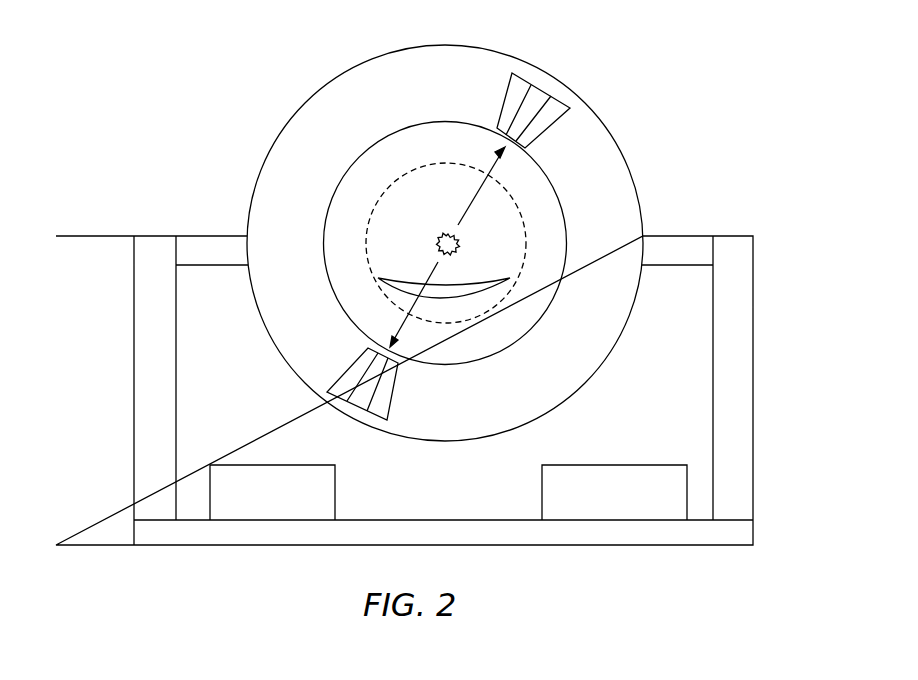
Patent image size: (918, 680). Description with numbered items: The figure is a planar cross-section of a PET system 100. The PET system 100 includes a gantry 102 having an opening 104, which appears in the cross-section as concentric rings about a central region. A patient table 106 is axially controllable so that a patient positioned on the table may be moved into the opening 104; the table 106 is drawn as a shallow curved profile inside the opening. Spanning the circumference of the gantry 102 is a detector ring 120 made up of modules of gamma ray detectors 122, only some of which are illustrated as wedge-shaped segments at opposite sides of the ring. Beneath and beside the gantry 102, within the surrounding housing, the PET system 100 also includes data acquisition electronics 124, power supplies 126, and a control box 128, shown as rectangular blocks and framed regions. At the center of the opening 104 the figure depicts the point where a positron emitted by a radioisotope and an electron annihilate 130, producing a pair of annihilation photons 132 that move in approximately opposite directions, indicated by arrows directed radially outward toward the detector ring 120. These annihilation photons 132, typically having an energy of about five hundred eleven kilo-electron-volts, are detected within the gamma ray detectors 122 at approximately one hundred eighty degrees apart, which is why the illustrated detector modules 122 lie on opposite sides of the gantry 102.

The PET system 100 is at (655, 100).
The gantry 102 is at (312, 95).
The opening 104 is at (446, 210).
The patient table 106 is at (402, 280).
The detector ring 120 is at (543, 87).
The gamma ray detectors 122 is at (533, 107).
The data acquisition electronics 124 is at (687, 500).
The power supplies 126 is at (210, 497).
The control box 128 is at (92, 245).
The annihilation 130 is at (458, 241).
The annihilation photons 132 is at (468, 162).